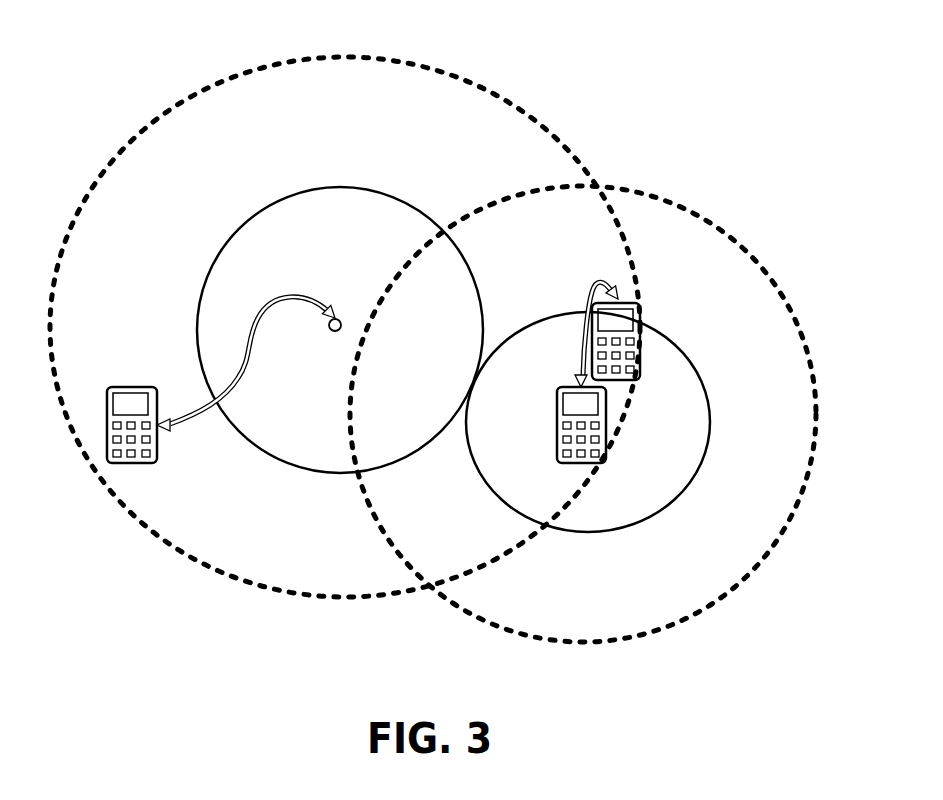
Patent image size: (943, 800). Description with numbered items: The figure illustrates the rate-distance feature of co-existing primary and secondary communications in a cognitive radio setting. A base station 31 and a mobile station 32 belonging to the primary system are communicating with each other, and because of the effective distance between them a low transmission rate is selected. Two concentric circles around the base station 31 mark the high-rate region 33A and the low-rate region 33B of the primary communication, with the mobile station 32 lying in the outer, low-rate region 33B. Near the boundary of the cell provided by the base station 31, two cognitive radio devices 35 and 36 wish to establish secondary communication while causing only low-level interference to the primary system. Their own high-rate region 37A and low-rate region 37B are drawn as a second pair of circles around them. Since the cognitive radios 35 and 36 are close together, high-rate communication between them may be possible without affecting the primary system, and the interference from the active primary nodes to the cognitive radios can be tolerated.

The base station 31 is at (332, 332).
The mobile station 32 is at (137, 387).
The high-rate region for the primary communication 33A is at (227, 247).
The low-rate region for the primary communication 33B is at (462, 78).
The cognitive radio device 35 is at (557, 432).
The cognitive radio device 36 is at (628, 302).
The high-rate region for the secondary communication 37A is at (706, 388).
The low-rate region for the secondary communication 37B is at (745, 247).